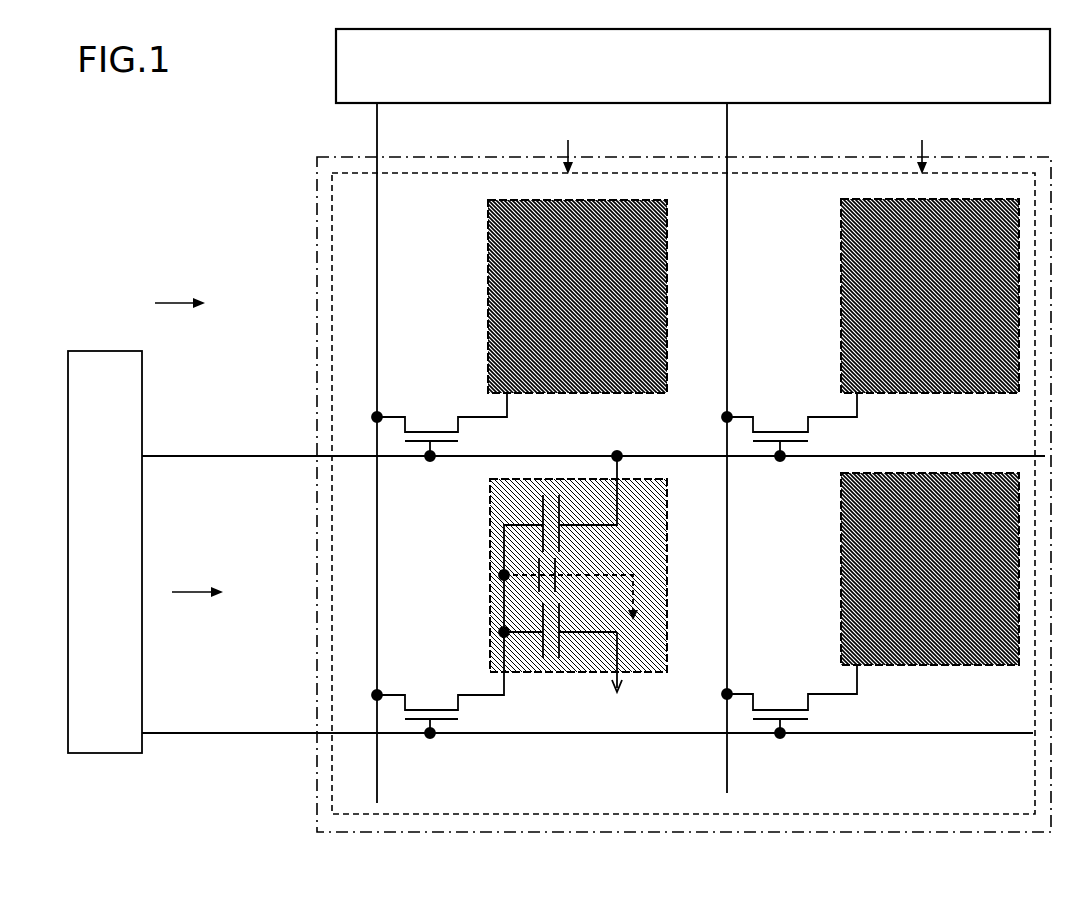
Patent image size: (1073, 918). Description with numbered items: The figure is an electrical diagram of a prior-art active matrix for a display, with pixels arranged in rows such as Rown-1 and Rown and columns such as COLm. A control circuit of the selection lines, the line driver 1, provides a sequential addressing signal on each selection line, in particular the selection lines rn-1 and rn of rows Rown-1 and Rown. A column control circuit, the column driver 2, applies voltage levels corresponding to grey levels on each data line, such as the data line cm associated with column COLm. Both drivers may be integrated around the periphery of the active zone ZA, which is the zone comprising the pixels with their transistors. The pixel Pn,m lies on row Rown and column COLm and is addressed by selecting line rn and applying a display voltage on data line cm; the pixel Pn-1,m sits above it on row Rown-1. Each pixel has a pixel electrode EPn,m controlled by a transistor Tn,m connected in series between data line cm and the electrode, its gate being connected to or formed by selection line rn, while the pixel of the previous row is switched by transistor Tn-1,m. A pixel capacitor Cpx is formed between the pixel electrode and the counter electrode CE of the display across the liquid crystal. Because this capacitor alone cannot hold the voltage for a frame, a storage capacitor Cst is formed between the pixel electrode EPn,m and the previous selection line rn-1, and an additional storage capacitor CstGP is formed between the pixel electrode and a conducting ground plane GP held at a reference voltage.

The control circuit of the selection lines 1 is at (100, 740).
The column control circuit 2 is at (336, 60).
The data line cm is at (377, 148).
The selection line rn-1 is at (186, 457).
The selection line rn is at (186, 733).
The active zone ZA is at (318, 808).
The conducting plane GP is at (330, 767).
The pixel Pn-1,m is at (493, 352).
The pixel Pn,m is at (492, 531).
The column COLm is at (564, 145).
The row Rown-1 is at (186, 290).
The row Rown is at (193, 580).
The transistor Tn-1,m is at (439, 426).
The transistor Tn,m is at (438, 704).
The storage capacitor Cst is at (563, 561).
The pixel electrode EPn,m is at (498, 615).
The additional storage capacitor CstGP is at (577, 604).
The pixel capacitor Cpx is at (558, 633).
The counter electrode CE is at (630, 674).